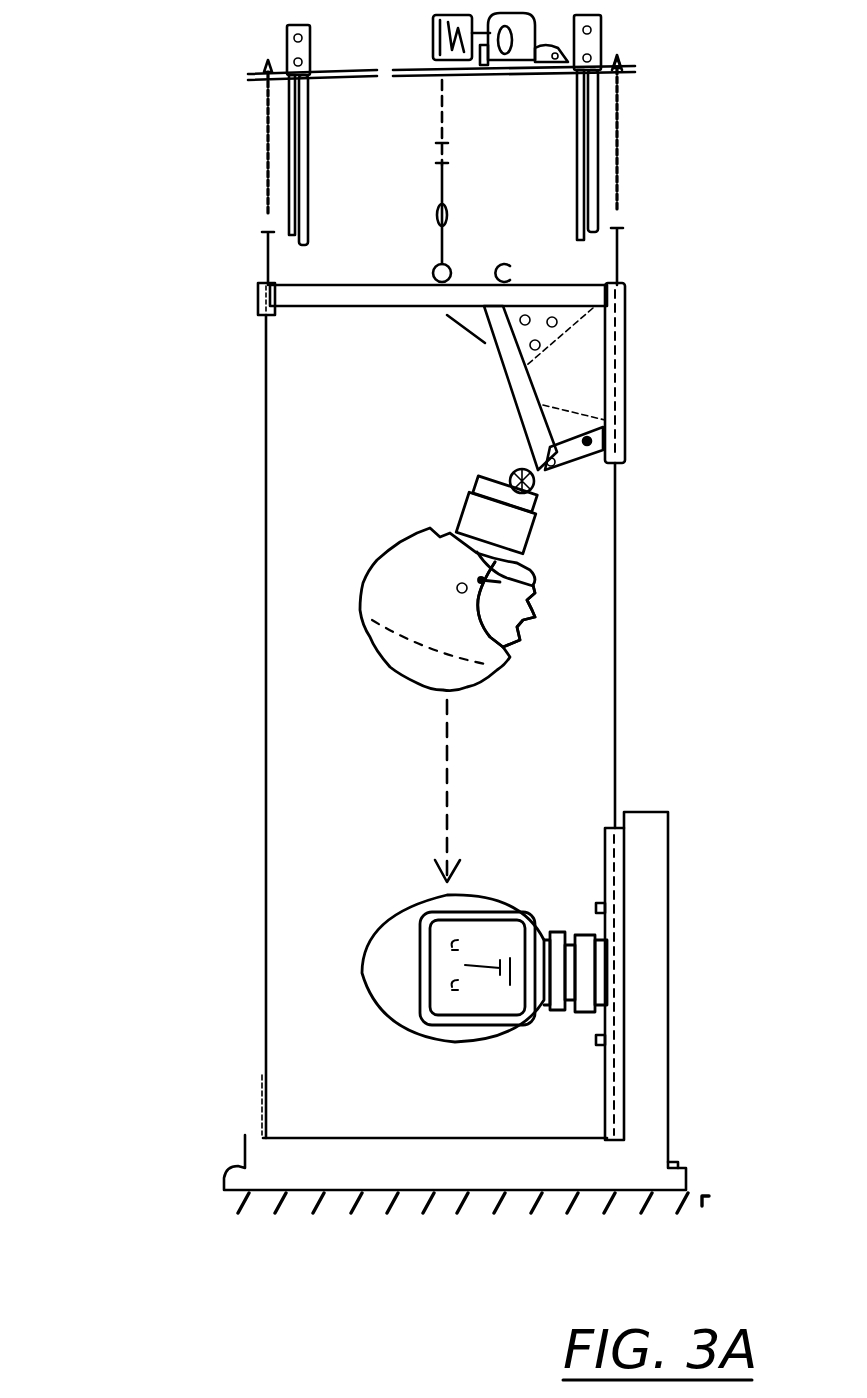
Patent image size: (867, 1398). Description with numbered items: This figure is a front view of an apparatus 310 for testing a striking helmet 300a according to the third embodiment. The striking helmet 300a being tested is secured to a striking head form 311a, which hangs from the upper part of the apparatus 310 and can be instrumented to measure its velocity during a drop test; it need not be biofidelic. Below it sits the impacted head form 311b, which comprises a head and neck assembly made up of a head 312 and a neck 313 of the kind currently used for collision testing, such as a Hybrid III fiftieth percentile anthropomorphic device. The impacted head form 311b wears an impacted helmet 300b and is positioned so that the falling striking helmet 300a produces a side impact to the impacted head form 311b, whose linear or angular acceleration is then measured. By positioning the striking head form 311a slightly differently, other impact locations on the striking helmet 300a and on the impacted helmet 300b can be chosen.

The apparatus 310 is at (371, 613).
The striking helmet 300a is at (367, 585).
The striking head form 311a is at (523, 623).
The impacted helmet 300b is at (370, 952).
The head 312 is at (492, 938).
The impacted head form 311b is at (462, 1003).
The neck 313 is at (563, 1013).